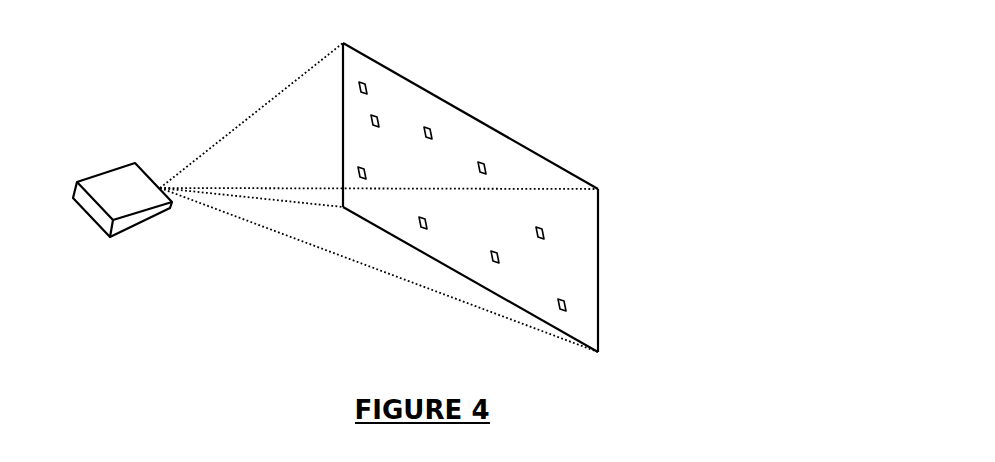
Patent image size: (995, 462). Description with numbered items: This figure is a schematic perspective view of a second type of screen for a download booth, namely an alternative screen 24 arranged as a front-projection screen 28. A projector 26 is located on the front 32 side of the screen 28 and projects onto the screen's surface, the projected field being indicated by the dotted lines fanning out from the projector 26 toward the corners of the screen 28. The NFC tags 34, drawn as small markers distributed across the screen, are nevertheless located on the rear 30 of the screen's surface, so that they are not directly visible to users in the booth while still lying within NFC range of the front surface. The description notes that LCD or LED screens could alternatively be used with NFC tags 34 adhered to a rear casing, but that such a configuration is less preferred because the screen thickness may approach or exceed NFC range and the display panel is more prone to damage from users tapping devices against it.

The screen 24 is at (232, 74).
The projector 26 is at (113, 195).
The front-projection screen 28 is at (470, 180).
The rear of the screen 30 is at (508, 135).
The front side of the screen 32 is at (376, 281).
The NFC tags 34 is at (565, 303).